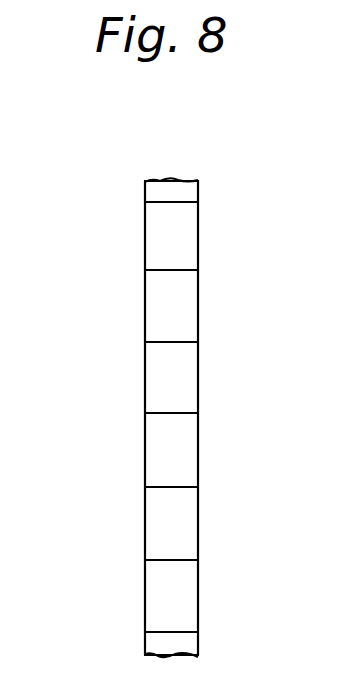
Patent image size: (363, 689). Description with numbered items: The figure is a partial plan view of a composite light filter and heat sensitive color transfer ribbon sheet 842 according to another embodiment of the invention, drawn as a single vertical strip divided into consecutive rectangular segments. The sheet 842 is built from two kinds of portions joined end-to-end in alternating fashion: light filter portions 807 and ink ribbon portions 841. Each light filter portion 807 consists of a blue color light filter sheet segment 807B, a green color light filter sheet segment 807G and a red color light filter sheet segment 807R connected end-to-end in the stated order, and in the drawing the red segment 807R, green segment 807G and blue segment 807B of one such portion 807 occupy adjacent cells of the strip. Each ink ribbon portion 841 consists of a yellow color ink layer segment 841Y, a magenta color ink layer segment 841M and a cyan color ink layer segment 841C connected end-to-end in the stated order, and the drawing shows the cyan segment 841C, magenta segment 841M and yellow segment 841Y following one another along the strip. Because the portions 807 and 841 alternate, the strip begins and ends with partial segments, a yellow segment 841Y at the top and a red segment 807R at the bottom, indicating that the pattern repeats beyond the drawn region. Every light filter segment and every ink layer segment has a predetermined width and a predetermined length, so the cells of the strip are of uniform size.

The composite light filter and heat sensitive color transfer ribbon sheet 842 is at (172, 178).
The ink ribbon portion 841 is at (144, 525).
The light filter portion 807 is at (144, 303).
The yellow color ink layer segment 841Y is at (199, 183).
The red color light filter sheet segment 807R is at (199, 238).
The green color light filter sheet segment 807G is at (199, 303).
The blue color light filter sheet segment 807B is at (199, 374).
The cyan color ink layer segment 841C is at (199, 447).
The magenta color ink layer segment 841M is at (199, 522).